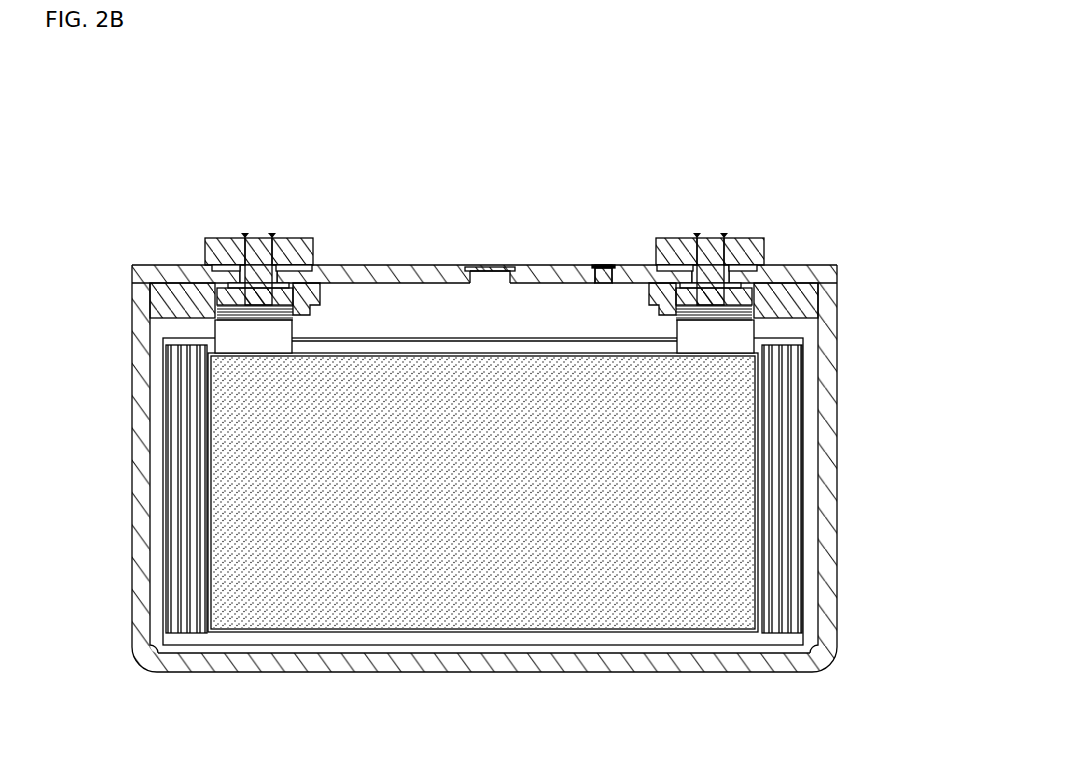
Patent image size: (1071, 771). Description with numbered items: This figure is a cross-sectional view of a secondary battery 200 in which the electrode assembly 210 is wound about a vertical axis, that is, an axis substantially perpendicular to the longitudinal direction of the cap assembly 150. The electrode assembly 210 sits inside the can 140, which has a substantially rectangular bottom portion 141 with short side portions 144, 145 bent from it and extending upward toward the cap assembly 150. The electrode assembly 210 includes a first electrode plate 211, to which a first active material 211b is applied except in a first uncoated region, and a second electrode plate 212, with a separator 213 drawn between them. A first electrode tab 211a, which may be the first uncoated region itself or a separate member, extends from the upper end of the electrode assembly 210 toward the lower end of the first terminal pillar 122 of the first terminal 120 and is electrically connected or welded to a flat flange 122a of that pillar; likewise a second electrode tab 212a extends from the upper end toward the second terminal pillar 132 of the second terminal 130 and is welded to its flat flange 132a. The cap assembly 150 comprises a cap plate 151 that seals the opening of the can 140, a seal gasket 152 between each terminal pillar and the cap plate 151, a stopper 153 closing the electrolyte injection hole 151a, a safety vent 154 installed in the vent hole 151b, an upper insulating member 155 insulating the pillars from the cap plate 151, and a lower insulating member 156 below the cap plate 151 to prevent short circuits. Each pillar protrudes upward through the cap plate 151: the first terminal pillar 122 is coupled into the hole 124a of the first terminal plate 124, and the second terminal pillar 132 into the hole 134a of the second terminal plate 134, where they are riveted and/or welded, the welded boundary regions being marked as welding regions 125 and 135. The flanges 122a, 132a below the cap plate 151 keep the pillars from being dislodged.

The secondary battery 200 is at (866, 107).
The first terminal 120 is at (300, 227).
The first terminal pillar 122 is at (320, 238).
The flange 122a is at (318, 298).
The first terminal plate 124 is at (235, 238).
The hole 124a is at (296, 230).
The welding region 125 is at (271, 234).
The second terminal 130 is at (699, 225).
The second terminal pillar 132 is at (767, 238).
The flange 132a is at (651, 292).
The second terminal plate 134 is at (685, 238).
The hole 134a is at (745, 230).
The welding portion 135 is at (723, 234).
The can 140 is at (491, 507).
The bottom portion 141 is at (250, 673).
The short side portion 144 is at (835, 518).
The short side portion 145 is at (140, 519).
The cap assembly 150 is at (484, 226).
The cap plate 151 is at (548, 265).
The electrolyte injection hole 151a is at (602, 284).
The vent hole 151b is at (485, 284).
The seal gasket 152 is at (240, 270).
The stopper 153 is at (598, 265).
The safety vent 154 is at (505, 267).
The upper insulating member 155 is at (222, 240).
The lower insulating member 156 is at (150, 298).
The electrode assembly 210 is at (488, 526).
The first electrode plate 211 is at (200, 372).
The first electrode tab 211a is at (253, 326).
The first active material 211b is at (376, 605).
The second electrode plate 212 is at (782, 369).
The second electrode tab 212a is at (720, 327).
The separator 213 is at (448, 650).